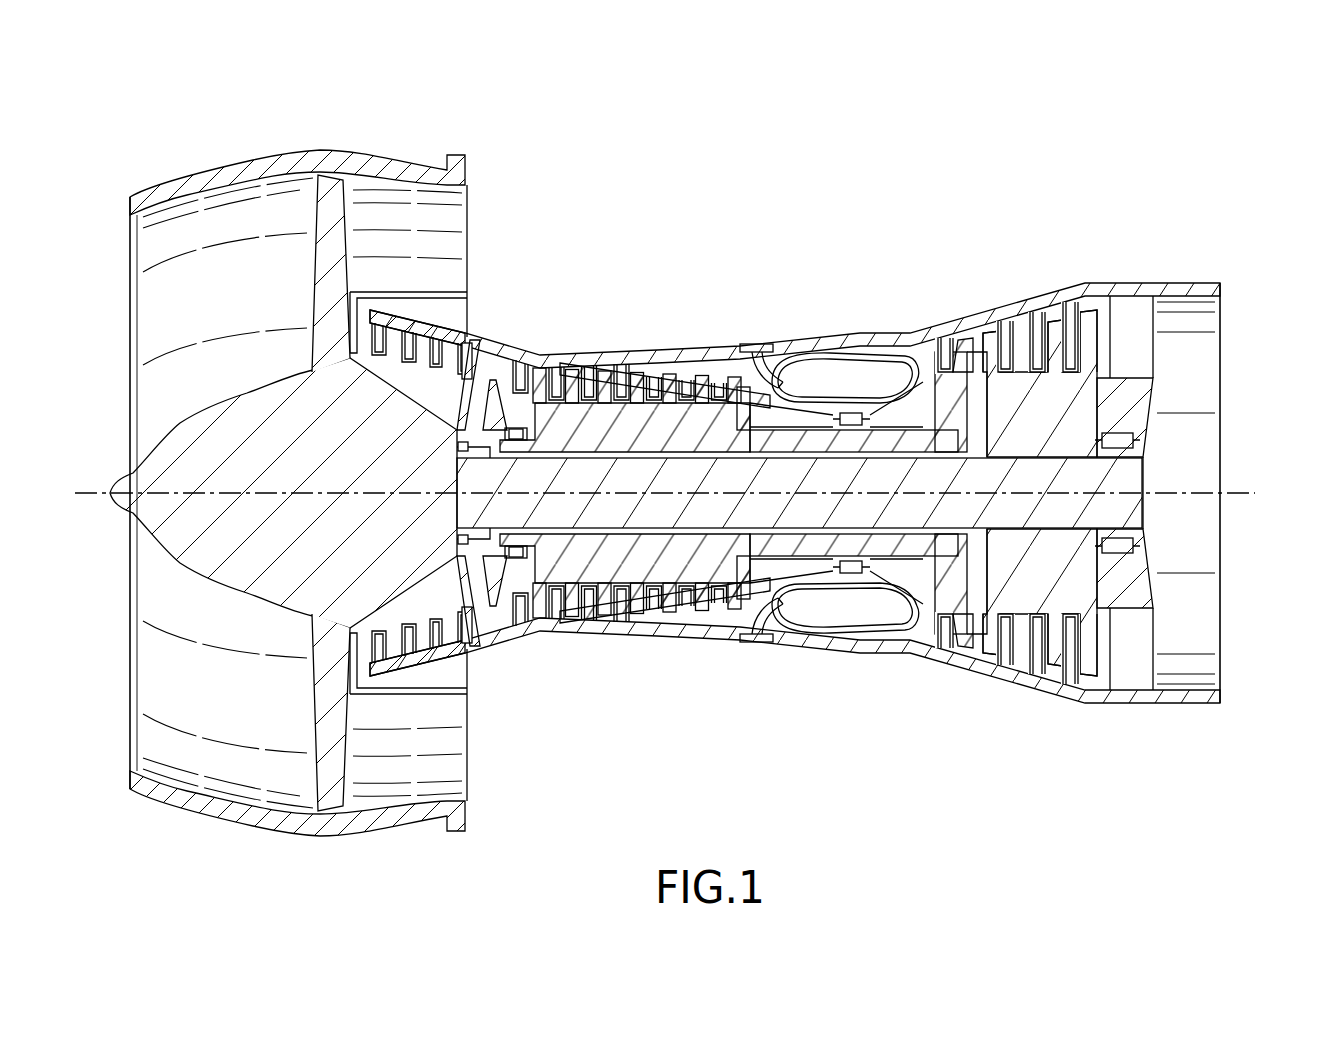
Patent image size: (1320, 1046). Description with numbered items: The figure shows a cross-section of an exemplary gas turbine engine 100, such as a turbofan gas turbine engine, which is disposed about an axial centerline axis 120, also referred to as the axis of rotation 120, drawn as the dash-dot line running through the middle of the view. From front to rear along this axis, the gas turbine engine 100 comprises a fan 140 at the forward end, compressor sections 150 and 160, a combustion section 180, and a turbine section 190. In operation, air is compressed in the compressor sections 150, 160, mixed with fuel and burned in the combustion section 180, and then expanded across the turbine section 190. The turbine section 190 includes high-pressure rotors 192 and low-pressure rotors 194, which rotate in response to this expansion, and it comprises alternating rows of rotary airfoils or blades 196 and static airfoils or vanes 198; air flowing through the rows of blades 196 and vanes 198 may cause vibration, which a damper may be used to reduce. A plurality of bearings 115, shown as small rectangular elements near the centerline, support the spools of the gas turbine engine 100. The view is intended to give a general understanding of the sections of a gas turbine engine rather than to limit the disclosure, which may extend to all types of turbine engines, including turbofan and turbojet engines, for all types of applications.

The gas turbine engine 100 is at (667, 499).
The bearings 115 is at (516, 429).
The axial centerline axis 120 is at (93, 491).
The fan 140 is at (347, 232).
The compressor section 150 is at (355, 845).
The compressor section 160 is at (533, 652).
The combustion section 180 is at (773, 672).
The turbine section 190 is at (960, 722).
The high-pressure rotors 192 is at (960, 364).
The low-pressure rotors 194 is at (1086, 398).
The blades 196 is at (1020, 332).
The vanes 198 is at (1038, 318).